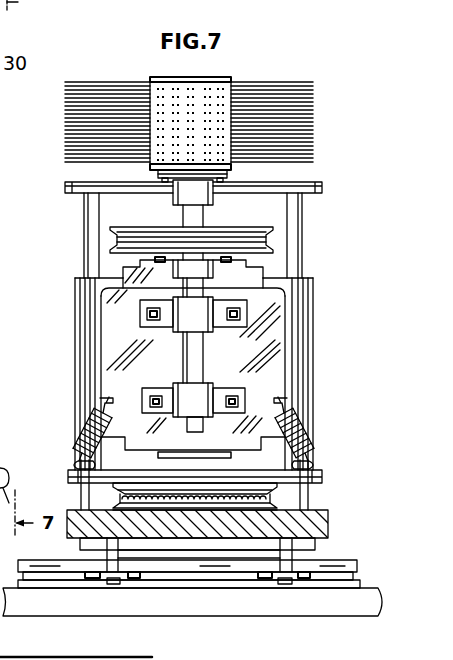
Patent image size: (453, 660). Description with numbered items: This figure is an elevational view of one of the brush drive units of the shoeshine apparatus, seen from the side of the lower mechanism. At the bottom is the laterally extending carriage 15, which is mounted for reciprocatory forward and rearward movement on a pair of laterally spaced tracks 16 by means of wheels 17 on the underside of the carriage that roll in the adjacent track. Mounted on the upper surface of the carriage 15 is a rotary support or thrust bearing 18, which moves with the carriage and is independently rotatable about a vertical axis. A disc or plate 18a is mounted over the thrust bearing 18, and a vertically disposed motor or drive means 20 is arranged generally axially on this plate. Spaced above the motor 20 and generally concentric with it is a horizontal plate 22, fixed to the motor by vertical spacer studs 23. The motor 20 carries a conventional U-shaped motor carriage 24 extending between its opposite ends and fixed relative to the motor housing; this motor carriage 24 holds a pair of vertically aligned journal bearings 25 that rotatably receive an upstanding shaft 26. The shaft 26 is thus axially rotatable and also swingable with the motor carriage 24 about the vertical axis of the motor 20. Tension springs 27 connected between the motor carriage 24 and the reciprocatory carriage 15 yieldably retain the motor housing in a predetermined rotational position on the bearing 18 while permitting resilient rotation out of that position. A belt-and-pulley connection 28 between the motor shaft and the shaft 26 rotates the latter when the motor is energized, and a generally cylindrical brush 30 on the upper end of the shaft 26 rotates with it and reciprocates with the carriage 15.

The carriage 15 is at (323, 522).
The tracks 16 is at (333, 565).
The wheels 17 is at (133, 578).
The thrust bearing 18 is at (280, 498).
The plate 18a is at (318, 470).
The motor 20 is at (313, 307).
The plate 22 is at (320, 186).
The spacer studs 23 is at (97, 233).
The motor carriage 24 is at (270, 360).
The journal bearings 25 is at (186, 392).
The shaft 26 is at (193, 357).
The tension springs 27 is at (78, 436).
The belt-and-pulley connection 28 is at (275, 243).
The brush 30 is at (308, 122).